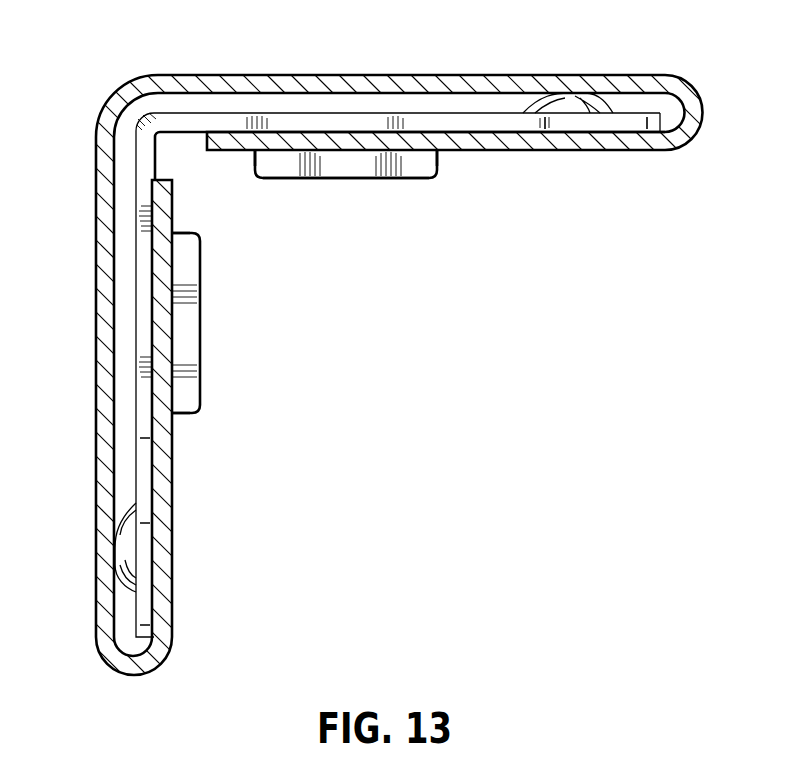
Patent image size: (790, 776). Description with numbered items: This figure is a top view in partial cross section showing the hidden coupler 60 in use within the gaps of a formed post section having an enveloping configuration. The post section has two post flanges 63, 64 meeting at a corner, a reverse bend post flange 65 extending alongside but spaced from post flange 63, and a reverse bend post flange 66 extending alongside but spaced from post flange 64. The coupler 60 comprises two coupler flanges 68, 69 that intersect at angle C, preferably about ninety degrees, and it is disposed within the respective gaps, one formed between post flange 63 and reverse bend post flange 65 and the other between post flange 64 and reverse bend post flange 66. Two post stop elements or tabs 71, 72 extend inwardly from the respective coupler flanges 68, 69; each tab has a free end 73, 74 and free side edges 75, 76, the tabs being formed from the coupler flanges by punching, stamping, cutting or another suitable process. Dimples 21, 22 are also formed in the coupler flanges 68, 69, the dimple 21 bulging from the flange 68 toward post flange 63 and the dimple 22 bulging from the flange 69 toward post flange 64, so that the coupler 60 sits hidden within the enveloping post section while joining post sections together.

The hidden coupler 60 is at (395, 388).
The post flange 63 is at (104, 341).
The post flange 64 is at (354, 76).
The reverse bend post flange 65 is at (163, 502).
The reverse bend post flange 66 is at (554, 146).
The coupler flange 68 is at (143, 448).
The coupler flange 69 is at (480, 122).
The post stop element or tab 71 is at (192, 348).
The post stop element or tab 72 is at (353, 168).
The free end 73 is at (200, 298).
The free end 74 is at (298, 179).
The free side edge 75 is at (195, 215).
The free side edge 76 is at (254, 157).
The dimple 21 is at (120, 548).
The dimple 22 is at (570, 102).
The angle C is at (143, 120).